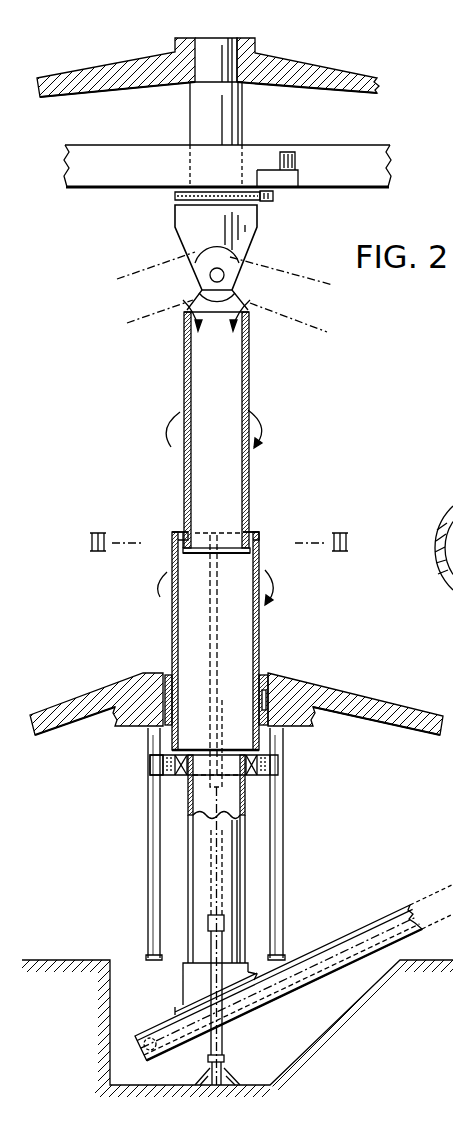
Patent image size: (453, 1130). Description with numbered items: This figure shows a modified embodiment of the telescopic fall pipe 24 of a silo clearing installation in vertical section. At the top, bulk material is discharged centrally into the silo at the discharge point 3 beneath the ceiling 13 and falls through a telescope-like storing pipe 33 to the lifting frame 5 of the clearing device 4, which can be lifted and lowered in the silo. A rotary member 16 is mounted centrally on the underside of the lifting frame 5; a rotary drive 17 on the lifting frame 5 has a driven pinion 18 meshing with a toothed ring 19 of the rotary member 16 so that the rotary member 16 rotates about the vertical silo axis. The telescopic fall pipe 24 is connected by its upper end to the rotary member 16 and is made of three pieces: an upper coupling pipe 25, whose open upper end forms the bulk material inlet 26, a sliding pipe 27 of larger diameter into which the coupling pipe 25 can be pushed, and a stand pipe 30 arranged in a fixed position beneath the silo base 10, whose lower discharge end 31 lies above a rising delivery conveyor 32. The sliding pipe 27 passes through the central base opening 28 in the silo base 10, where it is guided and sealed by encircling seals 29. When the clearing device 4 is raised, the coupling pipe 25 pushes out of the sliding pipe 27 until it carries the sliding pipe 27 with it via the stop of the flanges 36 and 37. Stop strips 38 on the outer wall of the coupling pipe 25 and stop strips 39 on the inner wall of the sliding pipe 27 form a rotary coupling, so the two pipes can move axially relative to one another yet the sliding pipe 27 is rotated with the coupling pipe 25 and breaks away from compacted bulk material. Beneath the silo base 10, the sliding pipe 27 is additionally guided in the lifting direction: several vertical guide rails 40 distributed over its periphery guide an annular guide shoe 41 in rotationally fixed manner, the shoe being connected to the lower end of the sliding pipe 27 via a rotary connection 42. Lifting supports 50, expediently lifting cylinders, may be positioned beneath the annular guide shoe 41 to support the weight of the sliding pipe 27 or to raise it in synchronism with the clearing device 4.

The discharge point 3 is at (210, 54).
The clearing device 4 is at (56, 182).
The lifting frame 5 is at (367, 163).
The silo base 10 is at (405, 716).
The ceiling 13 is at (352, 78).
The rotary member 16 is at (245, 222).
The rotary drive 17 is at (297, 161).
The driven pinion 18 is at (277, 200).
The toothed ring 19 is at (178, 197).
The telescopic fall pipe 24 is at (182, 398).
The coupling pipe 25 is at (247, 390).
The bulk material inlet 26 is at (213, 314).
The sliding pipe 27 is at (260, 643).
The base opening 28 is at (263, 692).
The encircling seals 29 is at (170, 675).
The stand pipe 30 is at (245, 908).
The discharge end 31 is at (195, 985).
The delivery conveyor 32 is at (405, 906).
The storing pipe 33 is at (235, 116).
The flange 36 is at (182, 532).
The flange 37 is at (180, 553).
The stop strips 38 is at (218, 530).
The stop strips 39 is at (213, 668).
The vertical guide rails 40 is at (155, 858).
The annular guide shoe 41 is at (278, 768).
The rotary connection 42 is at (167, 778).
The lifting supports 50 is at (212, 878).